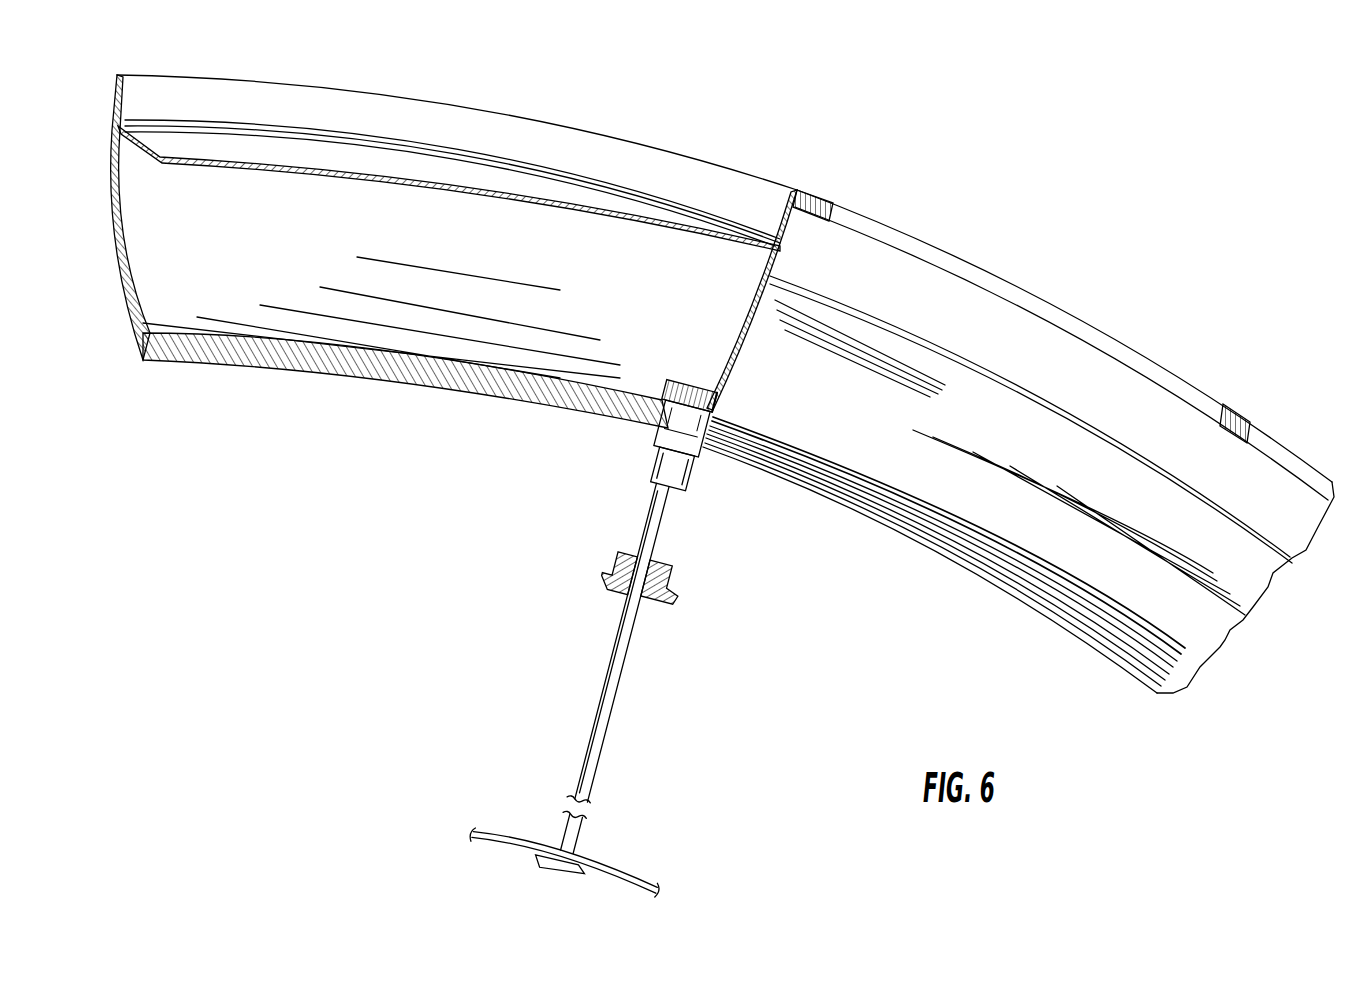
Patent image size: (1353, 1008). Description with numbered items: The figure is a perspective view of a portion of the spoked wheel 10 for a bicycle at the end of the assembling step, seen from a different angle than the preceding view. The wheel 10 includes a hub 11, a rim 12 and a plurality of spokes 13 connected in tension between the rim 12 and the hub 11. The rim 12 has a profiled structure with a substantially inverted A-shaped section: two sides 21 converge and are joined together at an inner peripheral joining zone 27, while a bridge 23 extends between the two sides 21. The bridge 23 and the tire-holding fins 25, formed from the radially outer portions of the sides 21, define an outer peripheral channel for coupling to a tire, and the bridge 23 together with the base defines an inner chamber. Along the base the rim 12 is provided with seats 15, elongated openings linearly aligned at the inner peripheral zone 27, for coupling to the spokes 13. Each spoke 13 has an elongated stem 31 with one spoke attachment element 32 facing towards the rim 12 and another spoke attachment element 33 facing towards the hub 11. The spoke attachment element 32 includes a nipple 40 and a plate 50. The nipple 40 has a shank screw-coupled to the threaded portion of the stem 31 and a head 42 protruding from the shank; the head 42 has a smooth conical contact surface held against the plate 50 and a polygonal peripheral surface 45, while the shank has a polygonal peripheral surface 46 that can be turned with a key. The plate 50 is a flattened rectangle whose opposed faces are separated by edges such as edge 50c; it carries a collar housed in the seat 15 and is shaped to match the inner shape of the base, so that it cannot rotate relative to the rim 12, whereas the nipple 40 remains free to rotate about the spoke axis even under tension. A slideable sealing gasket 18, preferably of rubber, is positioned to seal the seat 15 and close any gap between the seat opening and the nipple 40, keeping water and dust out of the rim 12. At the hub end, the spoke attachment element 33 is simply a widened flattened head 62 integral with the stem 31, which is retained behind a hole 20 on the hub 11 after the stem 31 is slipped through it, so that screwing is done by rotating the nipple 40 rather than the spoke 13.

The spoked wheel 10 is at (601, 575).
The hub 11 is at (628, 873).
The rim 12 is at (702, 377).
The spoke 13 is at (648, 668).
The seat 15 is at (658, 432).
The slideable sealing gasket 18 is at (677, 572).
The hole 20 is at (557, 847).
The side 21 is at (113, 250).
The bridge 23 is at (530, 183).
The tire-holding fin 25 is at (368, 108).
The inner peripheral joining zone 27 is at (352, 372).
The stem 31 is at (625, 680).
The spoke attachment element 32 is at (700, 404).
The spoke attachment element 33 is at (587, 835).
The nipple 40 is at (650, 455).
The head 42 is at (692, 384).
The polygonal peripheral surface 45 is at (722, 392).
The polygonal peripheral surface 46 is at (678, 474).
The plate 50 is at (653, 392).
The edge 50c is at (666, 388).
The widened flattened head 62 is at (540, 862).